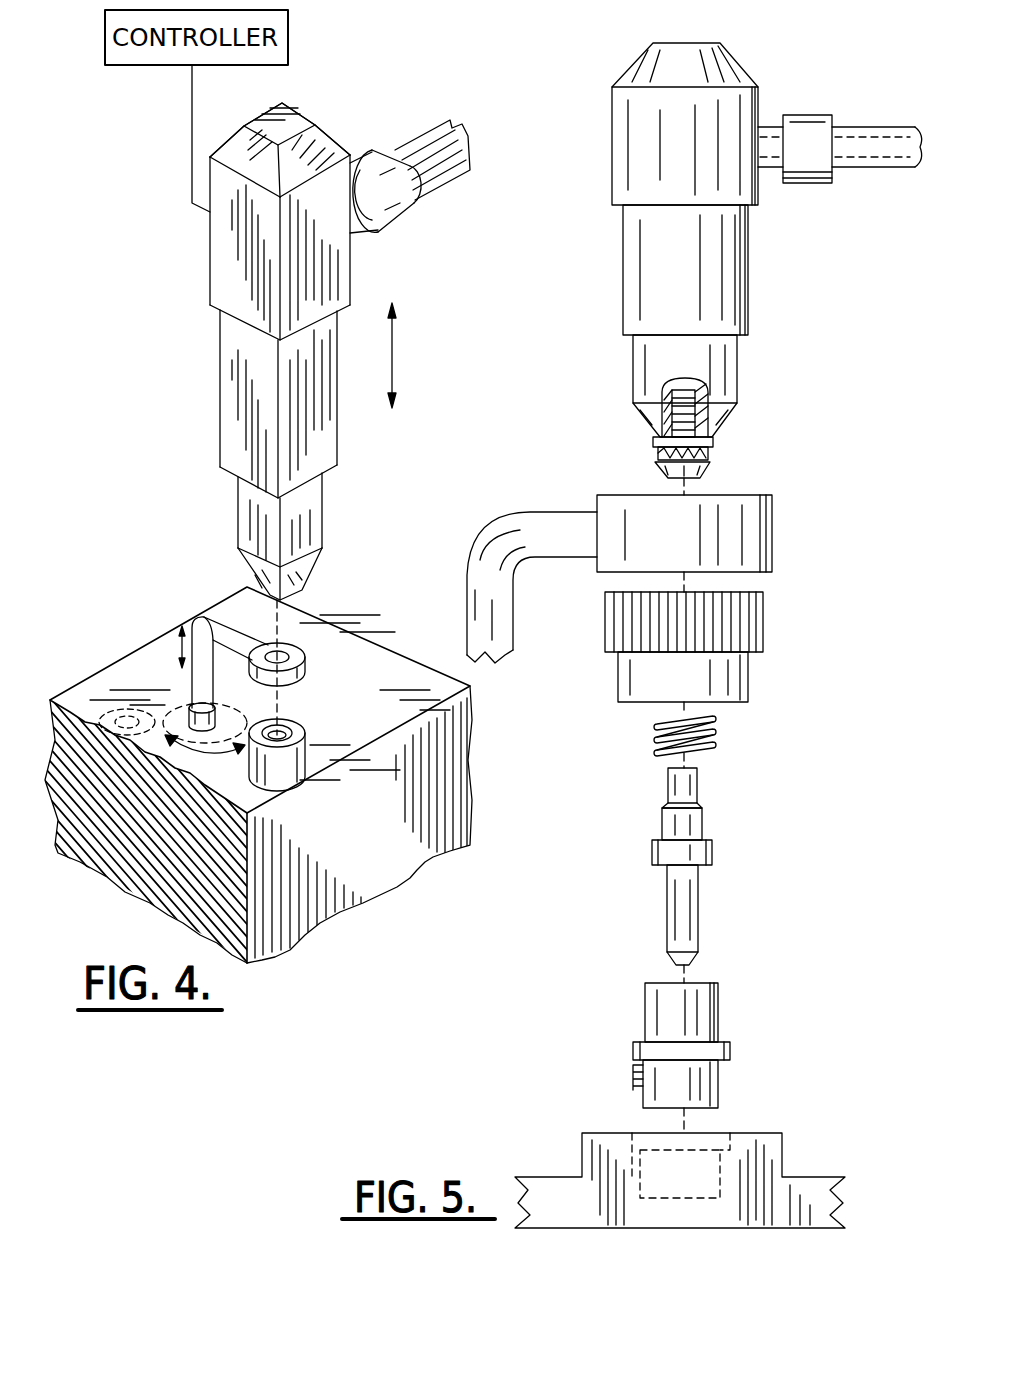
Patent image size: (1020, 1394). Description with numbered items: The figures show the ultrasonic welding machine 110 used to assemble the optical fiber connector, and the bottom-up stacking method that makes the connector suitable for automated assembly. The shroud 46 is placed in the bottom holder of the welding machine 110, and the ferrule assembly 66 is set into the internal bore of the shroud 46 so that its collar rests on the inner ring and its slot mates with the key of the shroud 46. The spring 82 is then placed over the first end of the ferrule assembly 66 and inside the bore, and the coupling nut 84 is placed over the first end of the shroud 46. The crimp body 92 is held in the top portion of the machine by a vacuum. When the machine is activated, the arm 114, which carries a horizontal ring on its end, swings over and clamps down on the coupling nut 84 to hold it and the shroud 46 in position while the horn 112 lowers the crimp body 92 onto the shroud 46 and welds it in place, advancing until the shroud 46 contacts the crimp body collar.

In FIG. 4, the ultrasonic welding machine 110 is at (327, 135).
In FIG. 5, the ultrasonic welding machine 110 is at (623, 70).
In FIG. 4, the horn 112 is at (220, 335).
In FIG. 5, the horn 112 is at (620, 305).
In FIG. 4, the arm 114 is at (210, 625).
In FIG. 5, the arm 114 is at (775, 525).
In FIG. 5, the crimp body 92 is at (710, 453).
In FIG. 5, the coupling nut 84 is at (765, 630).
In FIG. 5, the spring 82 is at (710, 740).
In FIG. 5, the ferrule assembly 66 is at (713, 853).
In FIG. 5, the shroud 46 is at (720, 1037).